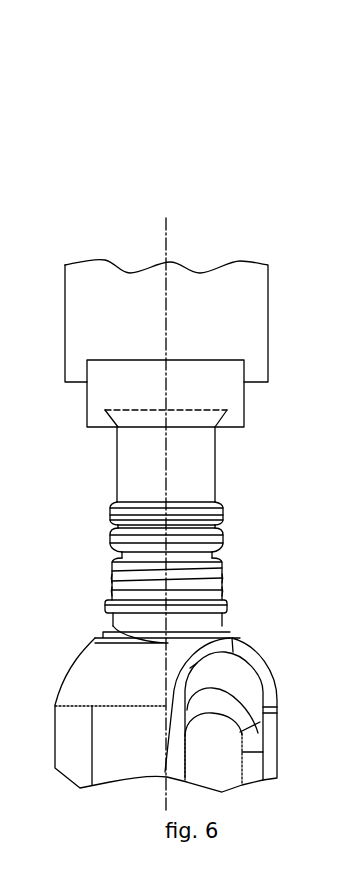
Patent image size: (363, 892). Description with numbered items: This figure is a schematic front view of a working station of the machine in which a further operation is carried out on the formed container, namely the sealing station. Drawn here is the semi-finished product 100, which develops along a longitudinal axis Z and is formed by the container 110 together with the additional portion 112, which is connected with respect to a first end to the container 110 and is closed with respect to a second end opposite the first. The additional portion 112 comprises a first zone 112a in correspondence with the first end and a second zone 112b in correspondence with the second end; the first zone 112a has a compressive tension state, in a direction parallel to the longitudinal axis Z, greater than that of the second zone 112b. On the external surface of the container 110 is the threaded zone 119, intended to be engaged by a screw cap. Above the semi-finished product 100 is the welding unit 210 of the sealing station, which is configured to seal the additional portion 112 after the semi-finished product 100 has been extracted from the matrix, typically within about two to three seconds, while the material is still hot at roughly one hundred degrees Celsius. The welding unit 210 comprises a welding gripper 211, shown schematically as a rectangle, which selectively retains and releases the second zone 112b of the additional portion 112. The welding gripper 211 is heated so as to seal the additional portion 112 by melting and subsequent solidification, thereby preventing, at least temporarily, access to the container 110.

The longitudinal axis Z is at (166, 244).
The welding unit 210 is at (280, 360).
The welding gripper 211 is at (242, 397).
The second zone 112b is at (215, 450).
The additional portion 112 is at (222, 508).
The first zone 112a is at (218, 528).
The semi-finished product 100 is at (247, 600).
The threaded zone 119 is at (185, 612).
The container 110 is at (278, 698).